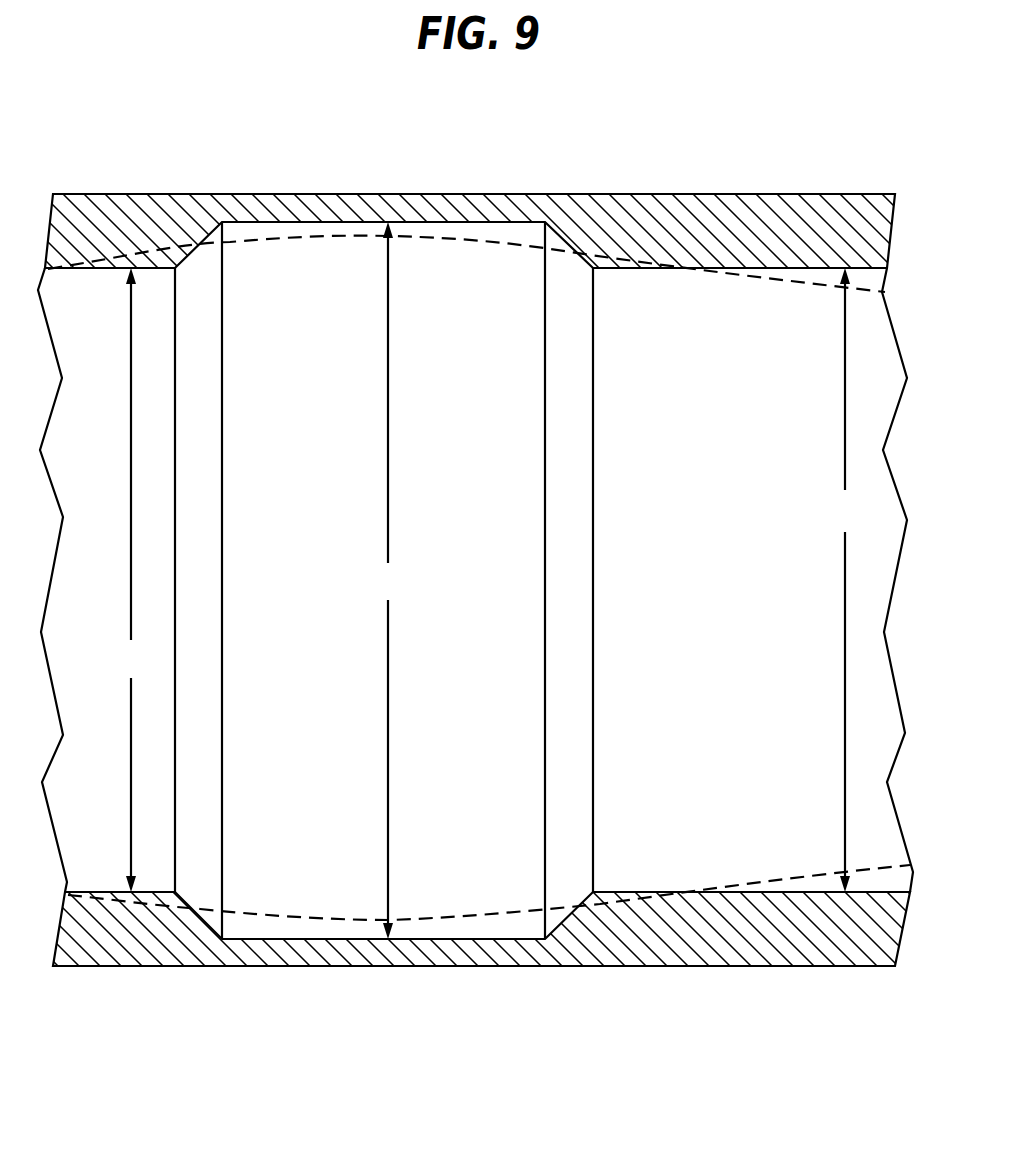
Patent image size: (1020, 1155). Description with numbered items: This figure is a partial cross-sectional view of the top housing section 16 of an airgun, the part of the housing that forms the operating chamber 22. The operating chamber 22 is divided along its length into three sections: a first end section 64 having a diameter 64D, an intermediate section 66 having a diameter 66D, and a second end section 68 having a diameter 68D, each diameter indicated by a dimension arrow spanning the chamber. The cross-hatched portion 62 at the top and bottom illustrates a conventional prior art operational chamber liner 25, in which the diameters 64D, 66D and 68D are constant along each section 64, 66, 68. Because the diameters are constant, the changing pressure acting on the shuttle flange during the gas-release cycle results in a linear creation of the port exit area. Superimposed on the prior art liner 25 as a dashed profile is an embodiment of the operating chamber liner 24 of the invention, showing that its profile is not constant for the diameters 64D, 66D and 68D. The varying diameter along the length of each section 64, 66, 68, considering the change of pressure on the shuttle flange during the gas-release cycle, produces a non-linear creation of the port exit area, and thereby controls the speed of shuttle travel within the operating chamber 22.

The top housing section 16 is at (696, 157).
The cross-hatched portion 62 is at (806, 250).
The operating chamber 22 is at (736, 600).
The second end section 68 is at (103, 994).
The intermediate section 66 is at (341, 994).
The first end section 64 is at (773, 996).
The prior art operational chamber liner 25 is at (812, 270).
The operating chamber liner 24 is at (812, 870).
The diameter of second end section 68D is at (131, 580).
The diameter of intermediate section 66D is at (388, 580).
The diameter of first end section 64D is at (846, 580).